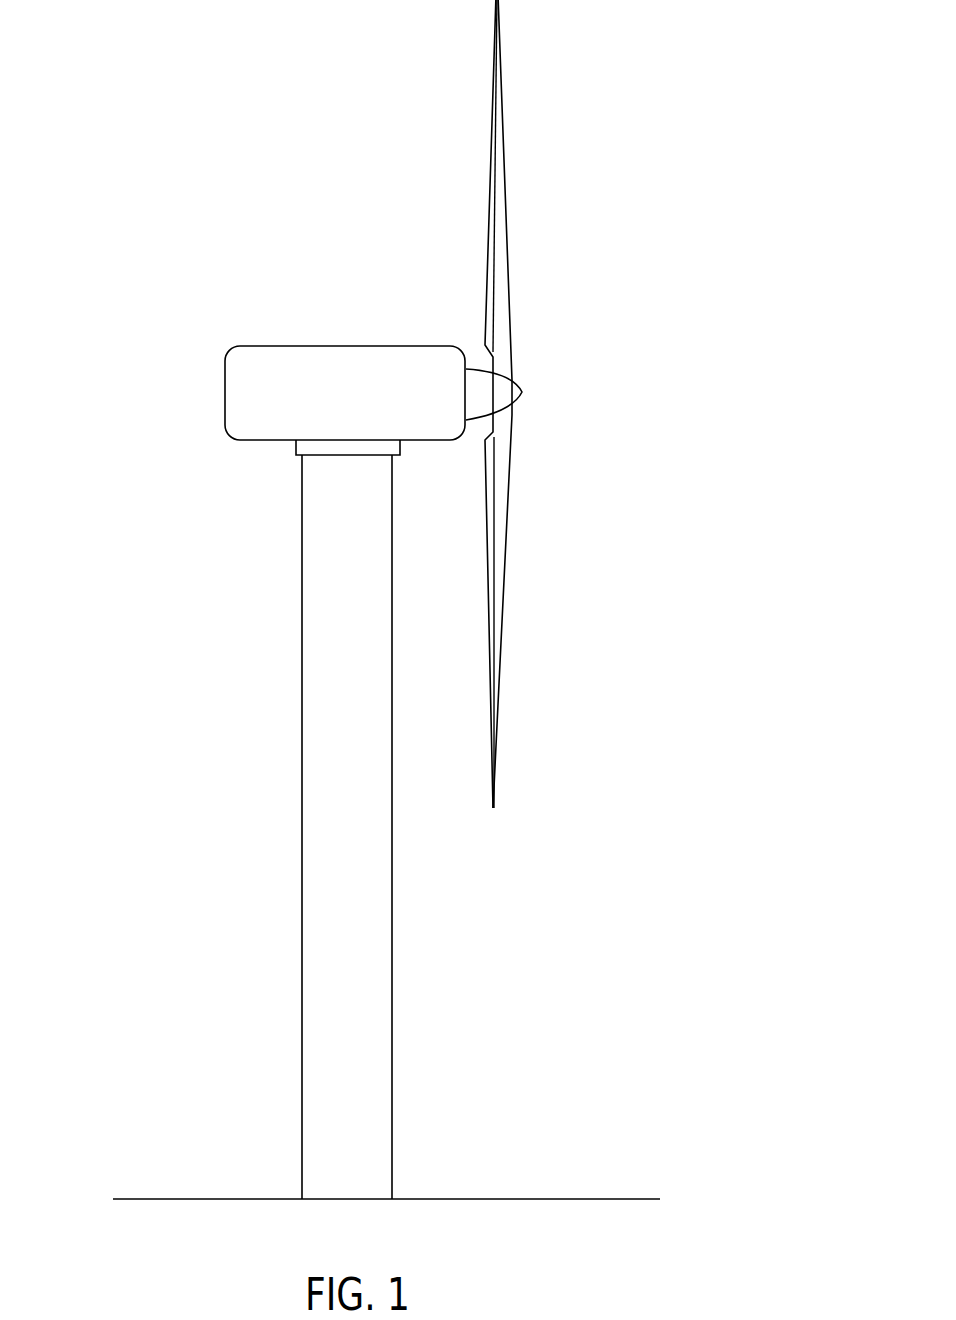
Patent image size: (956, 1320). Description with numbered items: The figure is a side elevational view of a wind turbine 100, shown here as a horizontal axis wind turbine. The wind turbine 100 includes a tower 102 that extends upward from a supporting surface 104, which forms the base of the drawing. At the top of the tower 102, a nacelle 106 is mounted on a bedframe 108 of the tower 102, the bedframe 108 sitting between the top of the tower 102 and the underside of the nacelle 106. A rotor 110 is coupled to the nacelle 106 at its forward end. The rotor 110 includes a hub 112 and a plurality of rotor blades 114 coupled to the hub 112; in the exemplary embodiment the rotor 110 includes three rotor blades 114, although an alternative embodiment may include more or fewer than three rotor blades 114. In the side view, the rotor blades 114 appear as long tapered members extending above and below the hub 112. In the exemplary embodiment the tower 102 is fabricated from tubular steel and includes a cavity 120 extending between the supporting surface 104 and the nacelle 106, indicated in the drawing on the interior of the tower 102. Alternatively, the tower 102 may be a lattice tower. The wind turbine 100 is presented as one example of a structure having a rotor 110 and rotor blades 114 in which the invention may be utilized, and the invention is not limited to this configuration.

The wind turbine 100 is at (148, 264).
The tower 102 is at (328, 892).
The supporting surface 104 is at (215, 1197).
The nacelle 106 is at (350, 359).
The bedframe 108 is at (312, 448).
The rotor 110 is at (532, 375).
The hub 112 is at (505, 397).
The rotor blades 114 is at (502, 251).
The cavity 120 is at (333, 723).